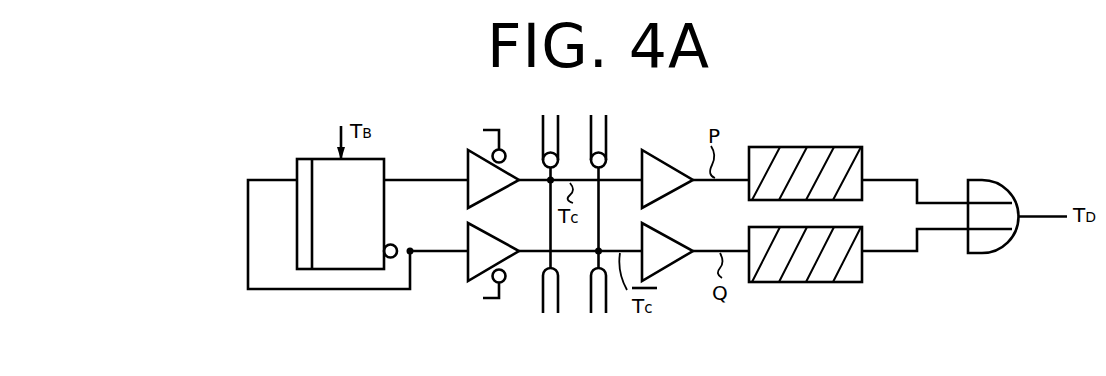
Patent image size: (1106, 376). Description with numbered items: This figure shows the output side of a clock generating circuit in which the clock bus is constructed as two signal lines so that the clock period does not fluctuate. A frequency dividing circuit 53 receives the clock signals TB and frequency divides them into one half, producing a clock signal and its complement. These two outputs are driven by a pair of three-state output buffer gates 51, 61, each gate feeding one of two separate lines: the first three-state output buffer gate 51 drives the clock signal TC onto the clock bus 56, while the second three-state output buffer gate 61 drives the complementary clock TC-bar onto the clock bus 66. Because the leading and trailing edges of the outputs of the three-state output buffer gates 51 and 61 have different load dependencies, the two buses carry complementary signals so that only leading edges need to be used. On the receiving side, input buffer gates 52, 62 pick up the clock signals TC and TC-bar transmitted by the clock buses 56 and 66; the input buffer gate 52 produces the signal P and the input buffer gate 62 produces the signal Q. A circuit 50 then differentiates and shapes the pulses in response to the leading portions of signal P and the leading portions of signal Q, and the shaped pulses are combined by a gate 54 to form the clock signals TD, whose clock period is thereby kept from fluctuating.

The differentiating and shaping circuit 50 is at (863, 228).
The 3-state output buffer gate 51 is at (467, 173).
The input buffer gate 52 is at (670, 160).
The frequency dividing circuit 53 is at (297, 170).
The AND gate 54 is at (1008, 193).
The clock bus 56 is at (543, 295).
The 3-state output buffer gate 61 is at (468, 266).
The input buffer gate 62 is at (680, 247).
The clock bus 66 is at (607, 295).